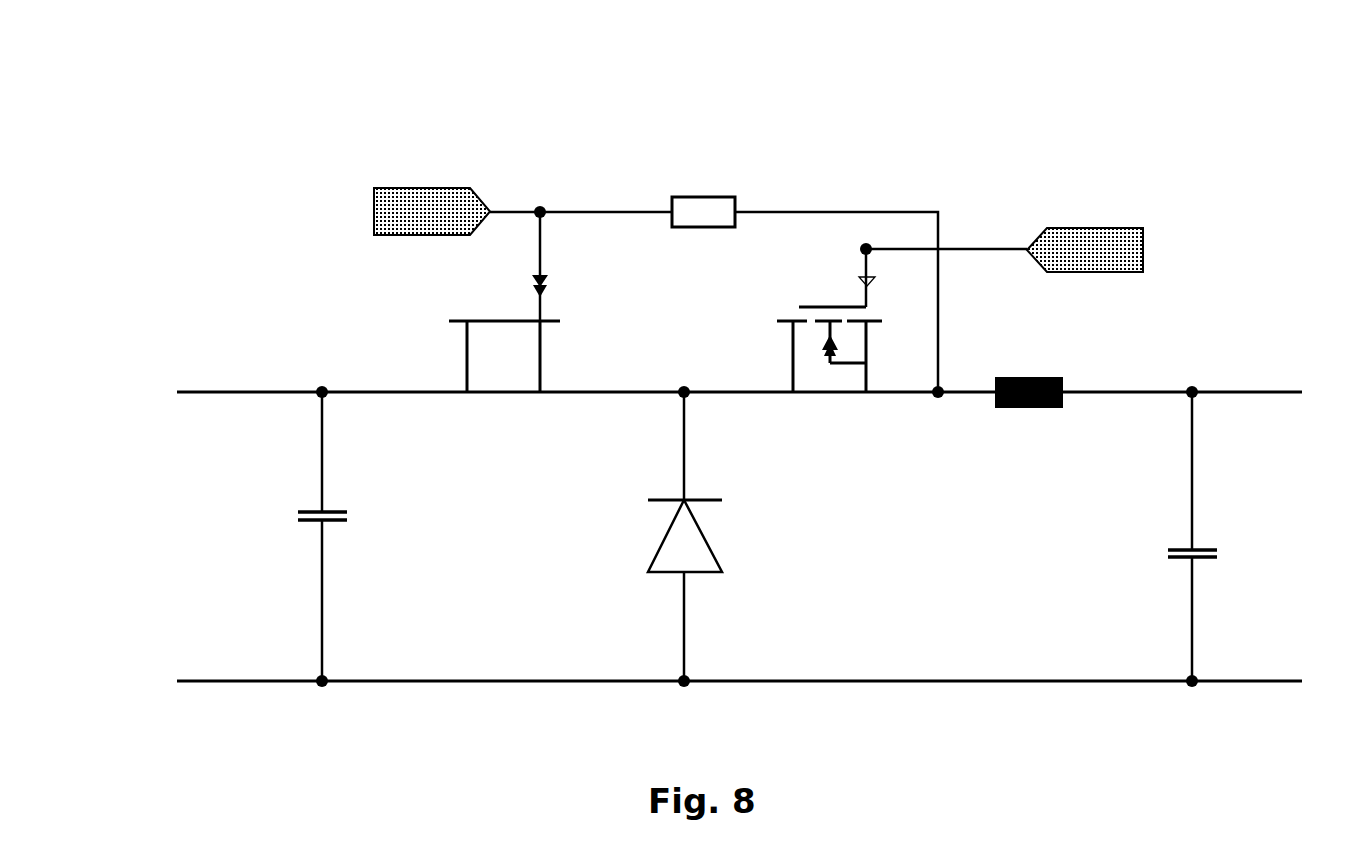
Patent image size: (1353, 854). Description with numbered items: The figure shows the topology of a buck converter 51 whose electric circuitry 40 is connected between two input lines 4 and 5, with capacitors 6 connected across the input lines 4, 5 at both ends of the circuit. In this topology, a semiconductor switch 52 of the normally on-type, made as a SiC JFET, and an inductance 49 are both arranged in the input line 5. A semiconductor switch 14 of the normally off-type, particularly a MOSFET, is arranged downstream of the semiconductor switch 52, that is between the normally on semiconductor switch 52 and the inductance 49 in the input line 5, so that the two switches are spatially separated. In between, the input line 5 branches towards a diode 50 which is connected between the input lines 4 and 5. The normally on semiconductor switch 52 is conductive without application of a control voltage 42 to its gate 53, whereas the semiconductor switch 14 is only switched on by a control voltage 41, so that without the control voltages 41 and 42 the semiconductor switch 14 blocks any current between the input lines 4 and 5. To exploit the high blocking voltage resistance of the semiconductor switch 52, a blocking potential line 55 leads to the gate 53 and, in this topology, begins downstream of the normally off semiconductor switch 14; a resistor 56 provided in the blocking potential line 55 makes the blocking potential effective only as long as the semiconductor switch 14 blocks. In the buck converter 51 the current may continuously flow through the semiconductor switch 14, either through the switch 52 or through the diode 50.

The input line 4 is at (220, 682).
The input line 5 is at (242, 392).
The capacitor 6 is at (286, 501).
The semiconductor switch 14 is at (820, 415).
The electric circuitry 40 is at (1228, 276).
The control voltage 41 is at (1100, 228).
The control voltage 42 is at (447, 188).
The inductance 49 is at (1022, 432).
The diode 50 is at (631, 530).
The buck converter 51 is at (600, 300).
The semiconductor switch 52 is at (496, 406).
The gate 53 is at (548, 265).
The blocking potential line 55 is at (897, 212).
The resistor 56 is at (713, 203).